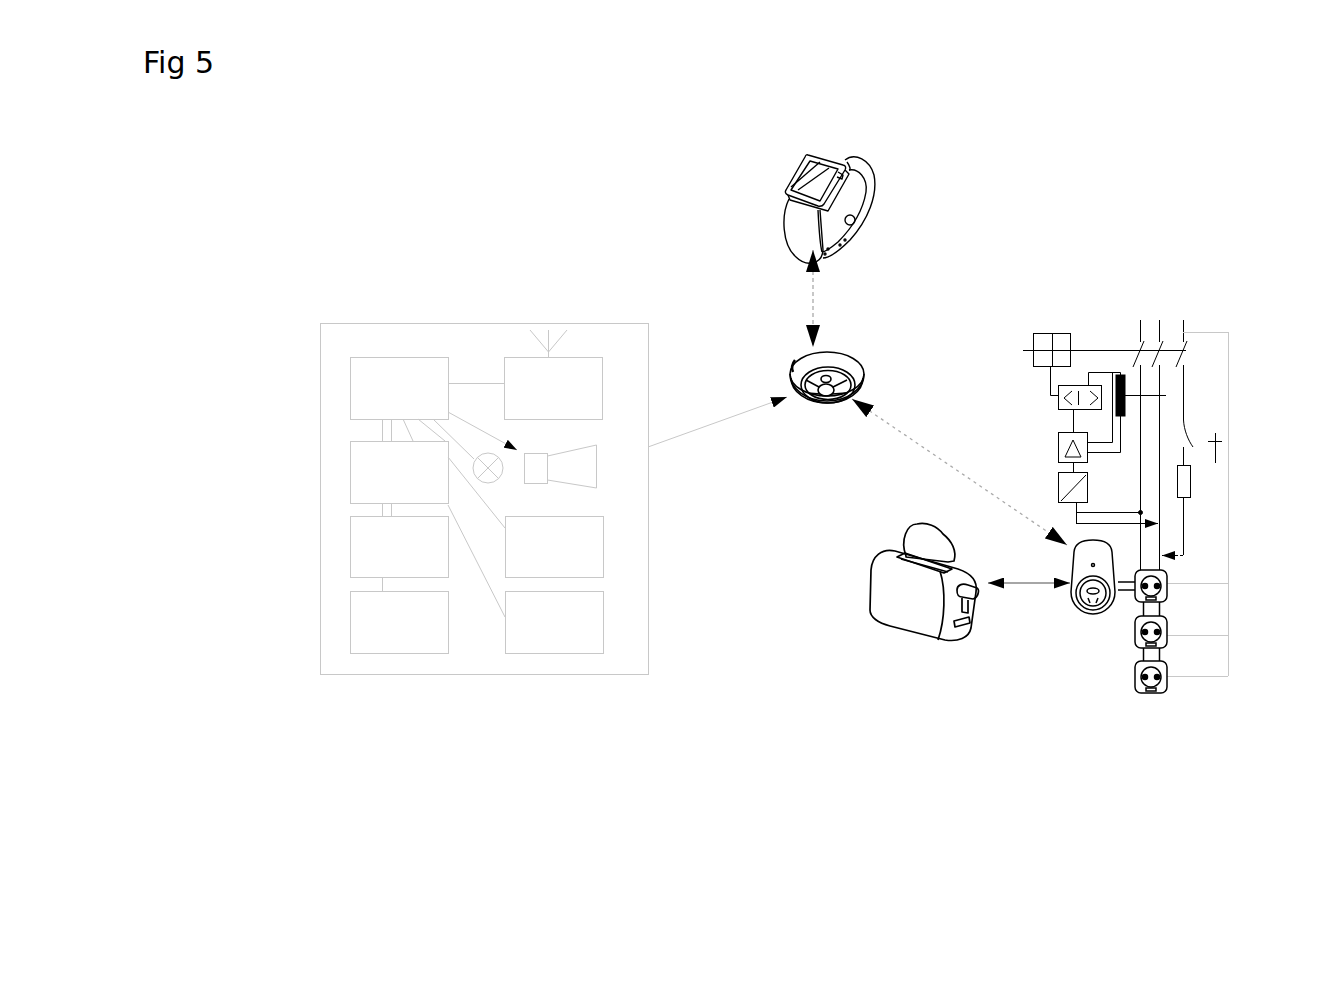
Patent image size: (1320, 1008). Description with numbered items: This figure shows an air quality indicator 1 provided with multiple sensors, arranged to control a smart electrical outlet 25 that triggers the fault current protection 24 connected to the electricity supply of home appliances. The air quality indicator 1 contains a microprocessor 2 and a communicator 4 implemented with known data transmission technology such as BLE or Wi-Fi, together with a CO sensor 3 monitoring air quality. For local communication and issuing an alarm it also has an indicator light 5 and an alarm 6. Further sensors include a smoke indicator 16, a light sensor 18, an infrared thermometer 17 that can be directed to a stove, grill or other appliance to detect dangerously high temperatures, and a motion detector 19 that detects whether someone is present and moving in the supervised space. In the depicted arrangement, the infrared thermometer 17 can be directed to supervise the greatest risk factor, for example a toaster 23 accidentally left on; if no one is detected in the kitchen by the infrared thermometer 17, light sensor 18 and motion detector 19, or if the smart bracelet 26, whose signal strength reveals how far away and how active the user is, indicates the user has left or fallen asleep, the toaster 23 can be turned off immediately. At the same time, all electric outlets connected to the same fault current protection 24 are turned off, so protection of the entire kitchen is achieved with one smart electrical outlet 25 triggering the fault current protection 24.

The air quality indicator 1 is at (320, 364).
The microprocessor 2 is at (350, 401).
The CO sensor 3 is at (350, 470).
The communicator 4 is at (602, 377).
The indicator light 5 is at (519, 449).
The alarm 6 is at (607, 469).
The smoke indicator 16 is at (350, 558).
The infrared thermometer 17 is at (350, 624).
The light sensor 18 is at (603, 541).
The motion detector (PIR) 19 is at (603, 613).
The toaster 23 is at (897, 581).
The fault current protection 24 is at (1114, 506).
The smart electrical outlet 25 is at (1099, 603).
The smart bracelet 26 is at (865, 209).